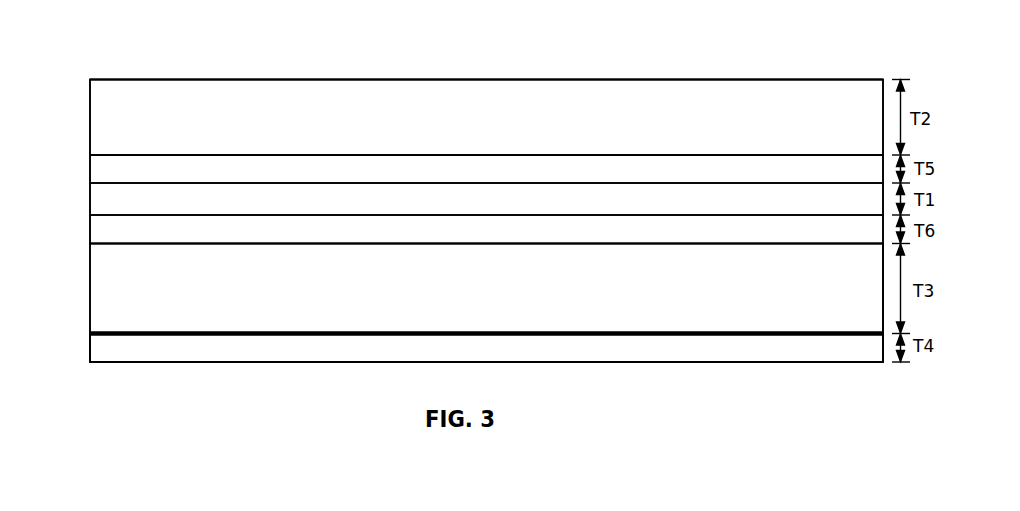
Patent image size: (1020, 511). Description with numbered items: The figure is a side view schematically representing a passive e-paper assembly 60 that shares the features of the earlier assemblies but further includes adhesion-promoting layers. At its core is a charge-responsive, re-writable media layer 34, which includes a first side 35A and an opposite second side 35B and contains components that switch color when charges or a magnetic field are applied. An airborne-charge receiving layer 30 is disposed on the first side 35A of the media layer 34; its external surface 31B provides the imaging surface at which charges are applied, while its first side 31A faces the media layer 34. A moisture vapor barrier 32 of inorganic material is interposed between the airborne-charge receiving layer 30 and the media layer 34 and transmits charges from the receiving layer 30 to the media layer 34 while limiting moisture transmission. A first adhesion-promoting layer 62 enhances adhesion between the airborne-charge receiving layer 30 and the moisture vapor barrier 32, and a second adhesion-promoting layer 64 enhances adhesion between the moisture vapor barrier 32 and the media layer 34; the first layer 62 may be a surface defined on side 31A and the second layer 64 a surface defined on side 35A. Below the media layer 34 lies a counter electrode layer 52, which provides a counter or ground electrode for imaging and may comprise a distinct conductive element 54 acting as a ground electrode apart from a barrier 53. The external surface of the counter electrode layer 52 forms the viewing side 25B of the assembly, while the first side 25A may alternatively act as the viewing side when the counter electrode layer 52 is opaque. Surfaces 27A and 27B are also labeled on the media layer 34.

The passive e-paper assembly 60 is at (152, 79).
The airborne-charge receiving layer 30 is at (90, 110).
The first side of the airborne-charge receiving layer 31A is at (183, 155).
The external surface of the airborne-charge receiving layer 31B is at (268, 79).
The first adhesion-promoting layer 62 is at (90, 168).
The moisture vapor barrier 32 is at (90, 200).
The second adhesion-promoting layer 64 is at (90, 234).
The first interface surface of media layer 27A is at (90, 263).
The charge-responsive, re-writable media layer 34 is at (90, 298).
The first side of the charge-responsive media layer 35A is at (192, 244).
The second side of the charge-responsive media layer 35B is at (218, 332).
The side edge of media layer 27B is at (883, 287).
The counter electrode layer 52 is at (90, 347).
The barrier 53 is at (202, 356).
The distinct conductive element 54 is at (153, 336).
The first side 25A is at (788, 80).
The viewing side 25B is at (773, 362).